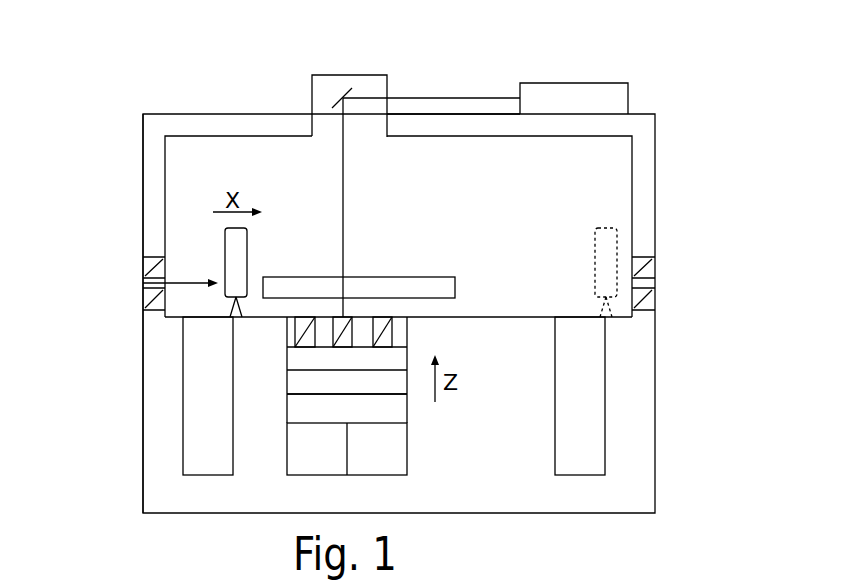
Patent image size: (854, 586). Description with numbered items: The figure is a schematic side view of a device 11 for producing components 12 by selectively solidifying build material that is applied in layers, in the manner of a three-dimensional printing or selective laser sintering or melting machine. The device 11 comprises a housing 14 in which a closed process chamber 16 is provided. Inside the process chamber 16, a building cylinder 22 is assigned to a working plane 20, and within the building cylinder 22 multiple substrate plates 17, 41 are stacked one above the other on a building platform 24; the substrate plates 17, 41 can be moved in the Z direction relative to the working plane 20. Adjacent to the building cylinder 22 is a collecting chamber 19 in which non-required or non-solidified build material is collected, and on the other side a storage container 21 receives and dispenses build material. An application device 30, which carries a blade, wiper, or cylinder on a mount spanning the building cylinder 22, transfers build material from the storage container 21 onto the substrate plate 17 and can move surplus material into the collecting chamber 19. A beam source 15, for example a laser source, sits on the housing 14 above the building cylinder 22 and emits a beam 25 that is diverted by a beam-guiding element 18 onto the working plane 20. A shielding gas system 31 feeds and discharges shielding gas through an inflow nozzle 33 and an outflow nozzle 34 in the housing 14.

The device 11 is at (462, 77).
The components 12 is at (383, 330).
The housing 14 is at (655, 440).
The beam source 15 is at (596, 97).
The process chamber 16 is at (228, 150).
The substrate plate 17 is at (297, 355).
The beam-guiding element 18 is at (335, 84).
The collecting chamber 19 is at (590, 380).
The working plane 20 is at (500, 316).
The storage container 21 is at (197, 459).
The building cylinder 22 is at (407, 453).
The building platform 24 is at (300, 408).
The beam 25 is at (342, 182).
The application device 30 is at (232, 250).
The shielding gas system 31 is at (113, 321).
The inflow nozzle 33 is at (127, 283).
The outflow nozzle 34 is at (290, 277).
The substrate plate 41 is at (297, 385).